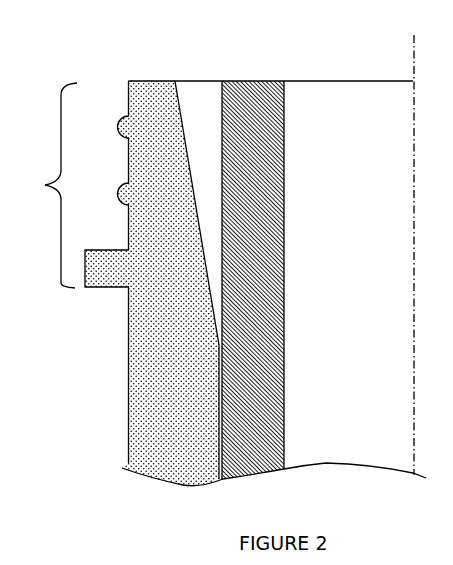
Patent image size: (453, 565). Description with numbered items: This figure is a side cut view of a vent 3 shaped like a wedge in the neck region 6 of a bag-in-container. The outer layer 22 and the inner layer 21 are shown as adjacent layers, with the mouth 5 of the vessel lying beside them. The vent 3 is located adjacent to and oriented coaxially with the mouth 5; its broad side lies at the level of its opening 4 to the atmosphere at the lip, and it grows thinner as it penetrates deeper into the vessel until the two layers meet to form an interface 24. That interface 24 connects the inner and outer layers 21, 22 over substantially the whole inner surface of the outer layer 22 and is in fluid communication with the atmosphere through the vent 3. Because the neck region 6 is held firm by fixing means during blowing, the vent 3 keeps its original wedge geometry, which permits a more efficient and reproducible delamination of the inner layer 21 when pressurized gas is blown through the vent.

The outer layer 22 is at (143, 103).
The opening 4 is at (209, 107).
The inner layer 21 is at (255, 107).
The mouth 5 is at (332, 108).
The neck region 6 is at (50, 185).
The vent 3 is at (218, 257).
The interface 24 is at (222, 402).